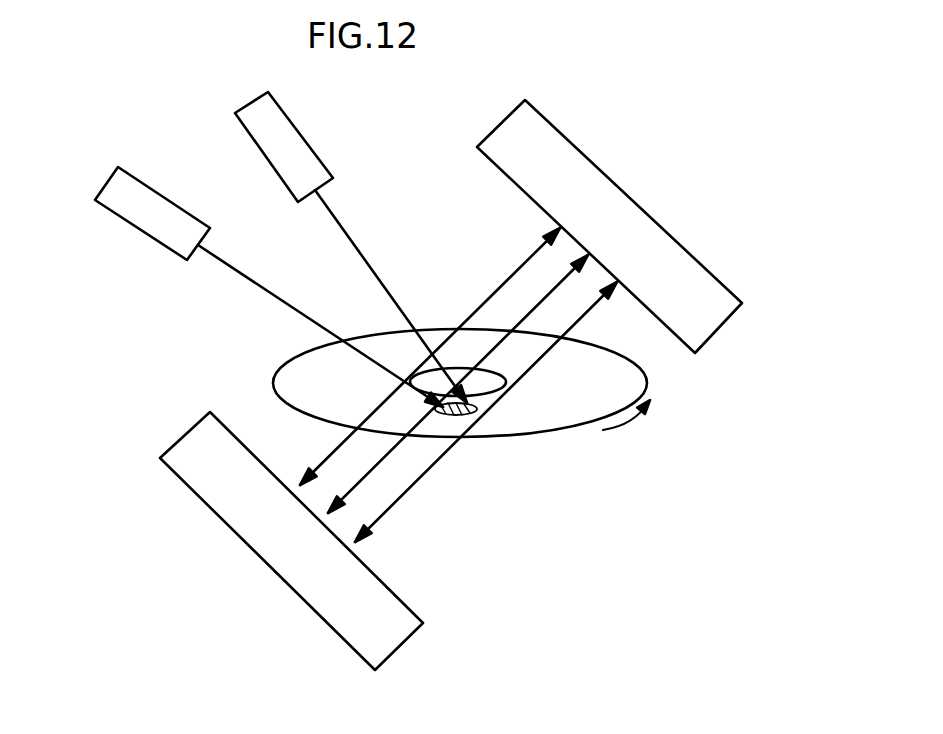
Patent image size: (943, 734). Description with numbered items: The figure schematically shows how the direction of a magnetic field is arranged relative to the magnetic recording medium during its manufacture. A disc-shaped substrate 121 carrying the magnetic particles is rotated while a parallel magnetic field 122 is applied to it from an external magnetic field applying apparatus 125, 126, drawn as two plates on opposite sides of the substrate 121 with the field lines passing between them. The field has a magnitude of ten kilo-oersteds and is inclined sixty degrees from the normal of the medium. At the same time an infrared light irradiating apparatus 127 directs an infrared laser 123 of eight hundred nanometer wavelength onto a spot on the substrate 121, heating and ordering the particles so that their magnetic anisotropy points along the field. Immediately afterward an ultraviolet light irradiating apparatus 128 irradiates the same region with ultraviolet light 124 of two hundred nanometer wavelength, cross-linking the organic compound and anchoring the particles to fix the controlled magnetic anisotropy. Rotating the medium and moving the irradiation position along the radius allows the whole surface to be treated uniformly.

The substrate 121 is at (562, 415).
The parallel magnetic field 122 is at (423, 473).
The infrared laser 123 is at (242, 268).
The ultraviolet light 124 is at (357, 238).
The external magnetic field applying apparatus 125 is at (677, 253).
The external magnetic field applying apparatus 126 is at (217, 493).
The infrared light irradiating apparatus 127 is at (117, 203).
The ultraviolet light irradiating apparatus 128 is at (285, 128).